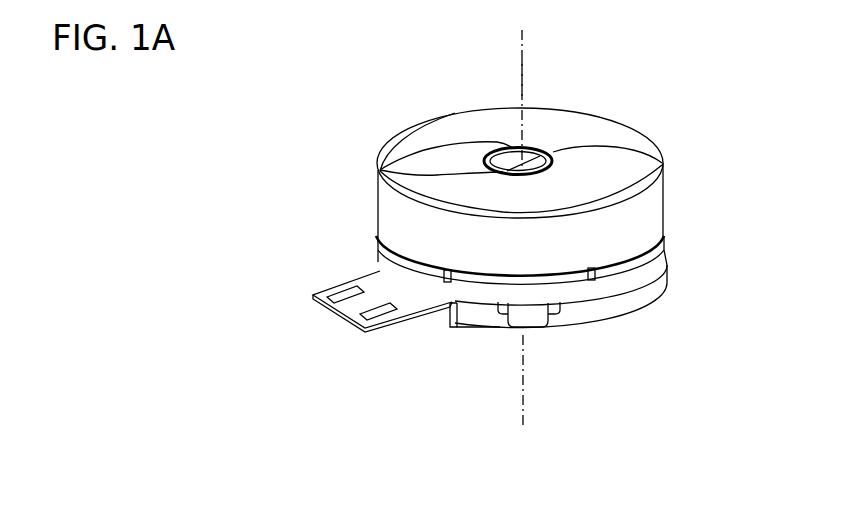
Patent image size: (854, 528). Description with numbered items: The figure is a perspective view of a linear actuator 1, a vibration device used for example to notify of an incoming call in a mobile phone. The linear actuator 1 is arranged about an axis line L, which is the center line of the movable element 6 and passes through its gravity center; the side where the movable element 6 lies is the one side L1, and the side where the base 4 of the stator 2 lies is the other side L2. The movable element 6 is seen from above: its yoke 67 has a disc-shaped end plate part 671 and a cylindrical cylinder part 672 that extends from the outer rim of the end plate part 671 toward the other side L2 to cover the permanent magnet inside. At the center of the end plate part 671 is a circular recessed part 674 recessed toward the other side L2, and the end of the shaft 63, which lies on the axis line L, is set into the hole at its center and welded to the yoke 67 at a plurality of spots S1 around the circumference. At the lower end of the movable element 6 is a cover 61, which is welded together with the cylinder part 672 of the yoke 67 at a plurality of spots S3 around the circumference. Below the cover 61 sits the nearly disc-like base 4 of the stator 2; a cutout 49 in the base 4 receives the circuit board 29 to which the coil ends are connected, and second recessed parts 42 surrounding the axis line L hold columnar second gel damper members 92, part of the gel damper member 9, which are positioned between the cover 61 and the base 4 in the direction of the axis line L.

The linear actuator 1 is at (347, 92).
The movable element 6 is at (733, 134).
The yoke 67 is at (643, 221).
The end plate part 671 is at (433, 133).
The cylinder part 672 is at (395, 217).
The recessed part 674 is at (543, 145).
The shaft 63 is at (630, 148).
The cover 61 is at (647, 258).
The welding spots S1 is at (380, 170).
The welding spots S3 is at (449, 270).
The base 4 is at (532, 348).
The stator 2 is at (589, 341).
The gel damper member 9 is at (557, 374).
The second gel damper members 92 is at (540, 313).
The second recessed parts 42 is at (503, 321).
The cutout 49 is at (450, 306).
The circuit board 29 is at (350, 305).
The one side L1 is at (525, 86).
The axis line L is at (532, 80).
The other side L2 is at (528, 397).